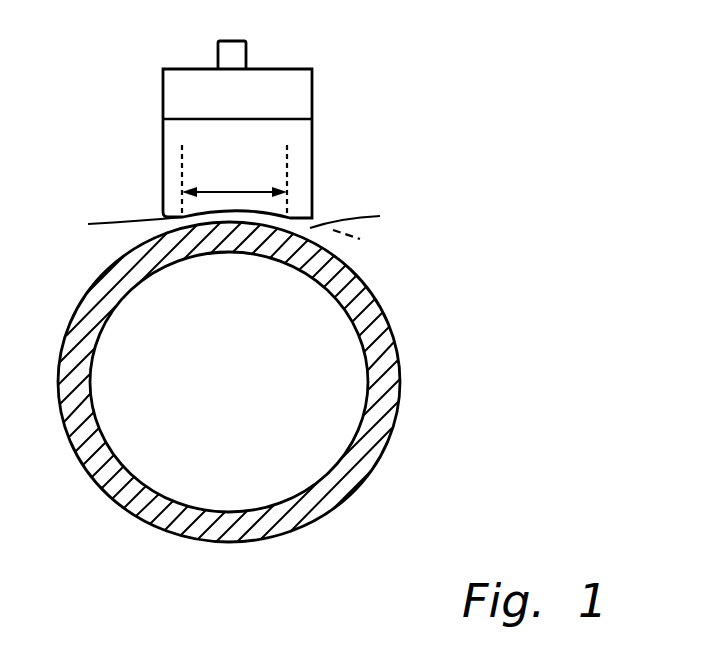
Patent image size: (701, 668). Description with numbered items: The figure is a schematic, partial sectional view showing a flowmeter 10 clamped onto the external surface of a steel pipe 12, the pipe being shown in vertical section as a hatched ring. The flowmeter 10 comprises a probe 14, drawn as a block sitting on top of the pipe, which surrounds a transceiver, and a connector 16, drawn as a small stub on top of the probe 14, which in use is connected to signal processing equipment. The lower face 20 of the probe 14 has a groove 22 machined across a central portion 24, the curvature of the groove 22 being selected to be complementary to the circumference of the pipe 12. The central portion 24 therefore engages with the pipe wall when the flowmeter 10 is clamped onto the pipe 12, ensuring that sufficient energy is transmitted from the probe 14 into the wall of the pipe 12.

The flowmeter 10 is at (138, 146).
The steel pipe 12 is at (393, 416).
The probe 14 is at (330, 134).
The connector 16 is at (218, 50).
The lower face 20 is at (362, 217).
The groove 22 is at (117, 224).
The central portion 24 is at (262, 190).